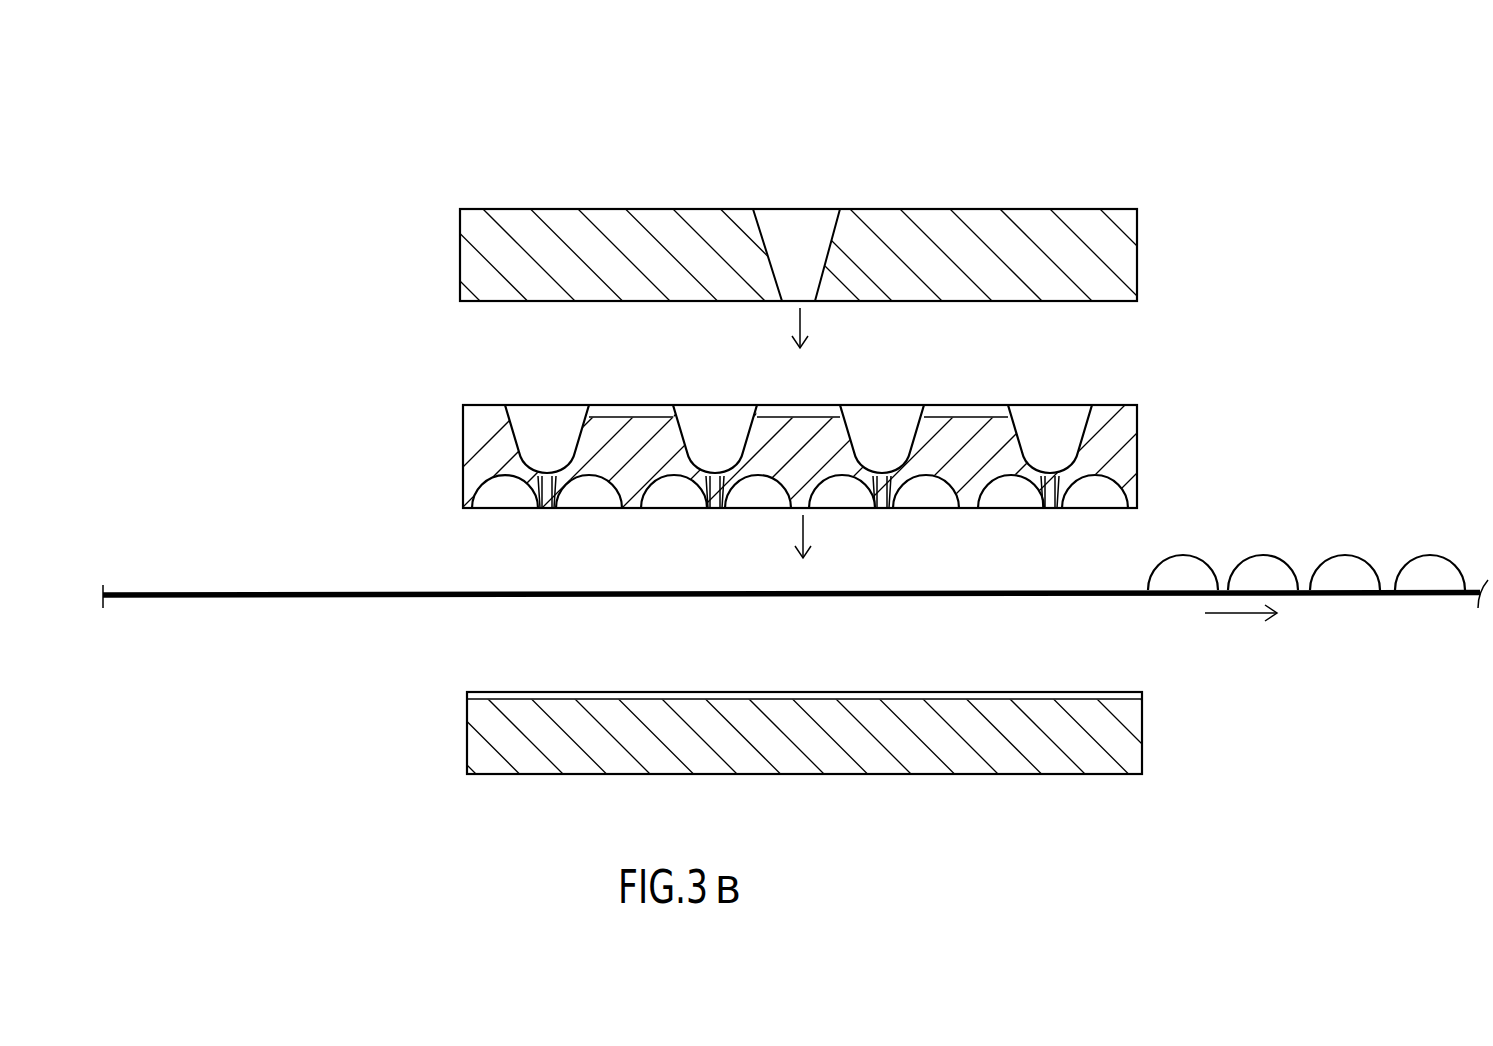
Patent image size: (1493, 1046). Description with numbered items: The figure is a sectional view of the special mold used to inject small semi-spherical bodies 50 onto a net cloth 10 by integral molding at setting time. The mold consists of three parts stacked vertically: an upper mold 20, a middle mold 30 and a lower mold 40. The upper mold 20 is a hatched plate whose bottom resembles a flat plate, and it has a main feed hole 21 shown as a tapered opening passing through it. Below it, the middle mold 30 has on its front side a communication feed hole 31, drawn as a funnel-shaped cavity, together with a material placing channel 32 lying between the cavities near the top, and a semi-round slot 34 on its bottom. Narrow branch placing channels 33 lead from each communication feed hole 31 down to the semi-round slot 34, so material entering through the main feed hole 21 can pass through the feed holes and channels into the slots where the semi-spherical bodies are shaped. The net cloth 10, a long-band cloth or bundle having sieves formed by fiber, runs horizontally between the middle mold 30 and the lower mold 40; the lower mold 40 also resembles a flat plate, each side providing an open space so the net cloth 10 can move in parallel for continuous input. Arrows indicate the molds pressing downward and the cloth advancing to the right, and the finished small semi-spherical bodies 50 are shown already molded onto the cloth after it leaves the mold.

The net cloth 10 is at (275, 590).
The upper mold 20 is at (1043, 222).
The main feed hole 21 is at (810, 222).
The middle mold 30 is at (1120, 430).
The communication feed hole 31 is at (1060, 420).
The material placing channel 32 is at (962, 412).
The branch placing channels 33 is at (1068, 493).
The semi-round slot 34 is at (1100, 490).
The lower mold 40 is at (1130, 733).
The small semi-spherical bodies 50 is at (1357, 570).